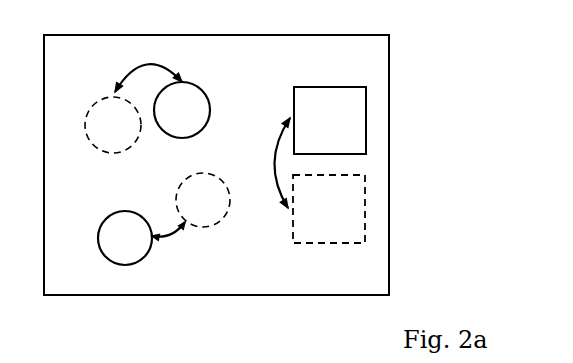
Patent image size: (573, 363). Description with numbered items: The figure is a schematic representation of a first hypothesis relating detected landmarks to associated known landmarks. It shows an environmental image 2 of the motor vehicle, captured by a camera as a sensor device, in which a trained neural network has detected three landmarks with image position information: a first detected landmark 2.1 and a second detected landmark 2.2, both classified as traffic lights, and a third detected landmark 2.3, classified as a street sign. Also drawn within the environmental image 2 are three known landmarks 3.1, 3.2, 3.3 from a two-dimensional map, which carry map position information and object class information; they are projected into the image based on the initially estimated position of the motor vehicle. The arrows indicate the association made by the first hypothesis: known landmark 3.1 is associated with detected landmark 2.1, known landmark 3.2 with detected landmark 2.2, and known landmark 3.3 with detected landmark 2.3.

The environmental image 2 is at (390, 163).
The first detected landmark 2.1 is at (107, 207).
The second detected landmark 2.2 is at (210, 90).
The third detected landmark 2.3 is at (318, 87).
The known landmark 3.1 is at (207, 228).
The known landmark 3.2 is at (110, 99).
The known landmark 3.3 is at (315, 247).